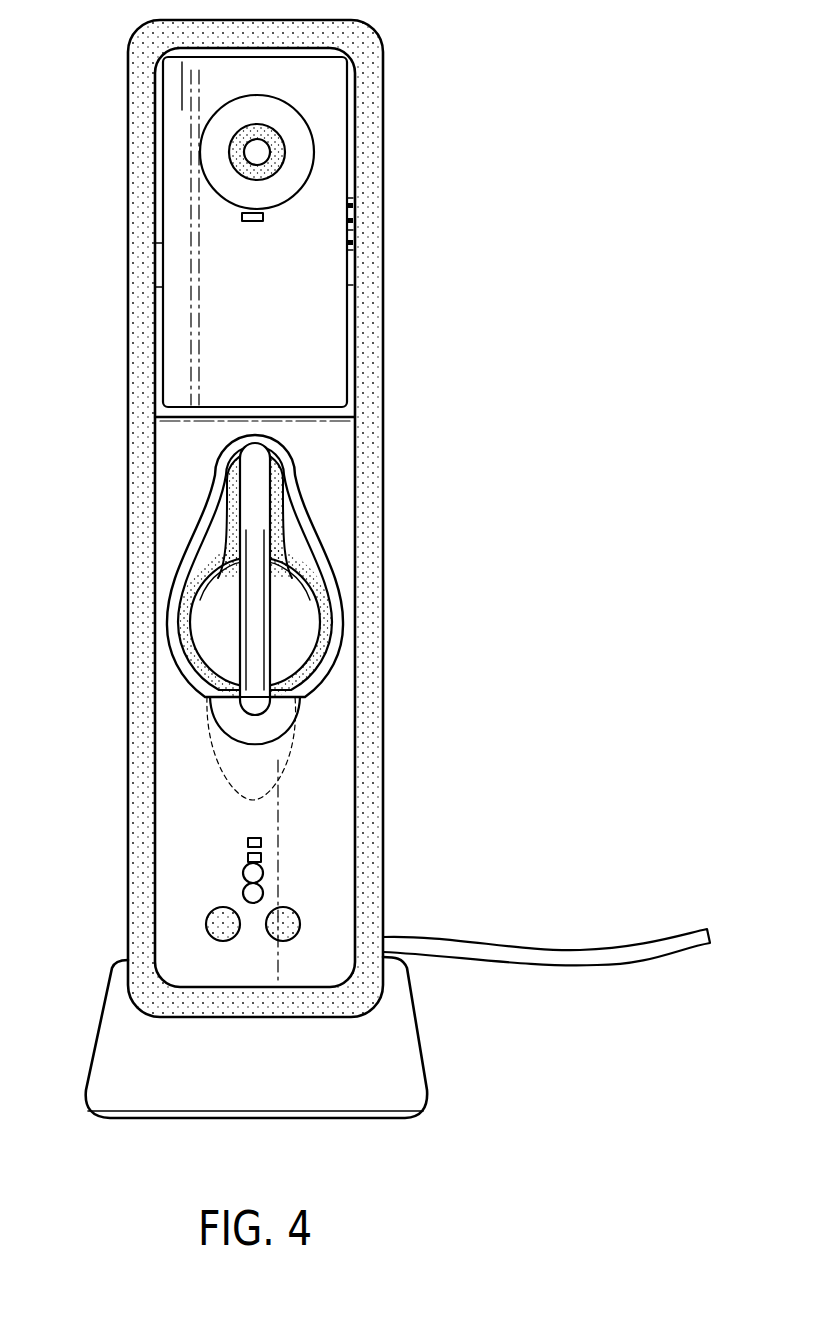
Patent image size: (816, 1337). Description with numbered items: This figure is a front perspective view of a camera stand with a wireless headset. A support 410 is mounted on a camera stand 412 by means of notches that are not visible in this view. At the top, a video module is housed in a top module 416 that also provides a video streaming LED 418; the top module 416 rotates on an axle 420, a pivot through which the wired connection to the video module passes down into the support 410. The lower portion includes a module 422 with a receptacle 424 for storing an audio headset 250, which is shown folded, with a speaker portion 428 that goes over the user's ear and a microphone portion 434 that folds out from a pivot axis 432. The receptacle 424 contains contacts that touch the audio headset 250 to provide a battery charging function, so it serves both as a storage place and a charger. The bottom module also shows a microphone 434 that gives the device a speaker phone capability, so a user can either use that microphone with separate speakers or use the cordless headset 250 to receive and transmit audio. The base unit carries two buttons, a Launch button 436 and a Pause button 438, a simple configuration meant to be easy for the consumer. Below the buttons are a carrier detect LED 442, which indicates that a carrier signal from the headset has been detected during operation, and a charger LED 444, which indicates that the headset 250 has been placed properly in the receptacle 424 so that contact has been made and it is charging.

The audio headset 250 is at (305, 618).
The support 410 is at (383, 680).
The camera stand 412 is at (425, 1023).
The top module 416 is at (349, 120).
The video streaming LED 418 is at (243, 217).
The axle 420 is at (349, 232).
The module 422 is at (355, 530).
The receptacle 424 is at (303, 472).
The speaker portion 428 is at (213, 620).
The pivot axis 432 is at (250, 483).
The microphone 434 is at (243, 872).
The Launch button 436 is at (300, 917).
The Pause button 438 is at (205, 927).
The carrier detect LED 442 is at (263, 843).
The charger LED 444 is at (263, 858).